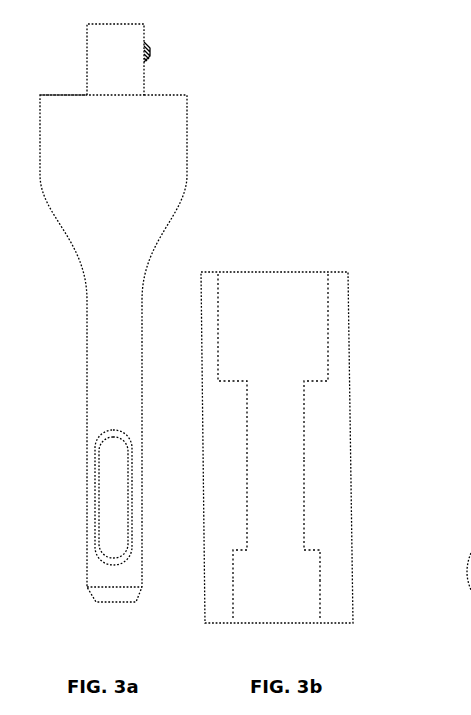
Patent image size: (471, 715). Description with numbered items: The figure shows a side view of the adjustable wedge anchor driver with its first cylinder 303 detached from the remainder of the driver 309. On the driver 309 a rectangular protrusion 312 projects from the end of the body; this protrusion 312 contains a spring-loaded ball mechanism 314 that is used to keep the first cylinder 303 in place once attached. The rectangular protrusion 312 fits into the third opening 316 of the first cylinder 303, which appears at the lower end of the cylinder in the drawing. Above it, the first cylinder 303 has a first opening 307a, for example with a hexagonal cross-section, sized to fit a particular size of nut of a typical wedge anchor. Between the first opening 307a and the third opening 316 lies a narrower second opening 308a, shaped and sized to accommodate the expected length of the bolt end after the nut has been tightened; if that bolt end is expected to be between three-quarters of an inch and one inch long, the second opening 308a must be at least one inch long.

In FIG. 3A, the handle 309 is at (234, 118).
In FIG. 3A, the rectangular protrusion 312 is at (77, 36).
In FIG. 3A, the spring-loaded ball mechanism 314 is at (155, 38).
In FIG. 3B, the first cylinder 303 is at (470, 421).
In FIG. 3B, the first opening 307a is at (339, 289).
In FIG. 3B, the second opening 308a is at (317, 467).
In FIG. 3B, the third opening 316 is at (282, 595).